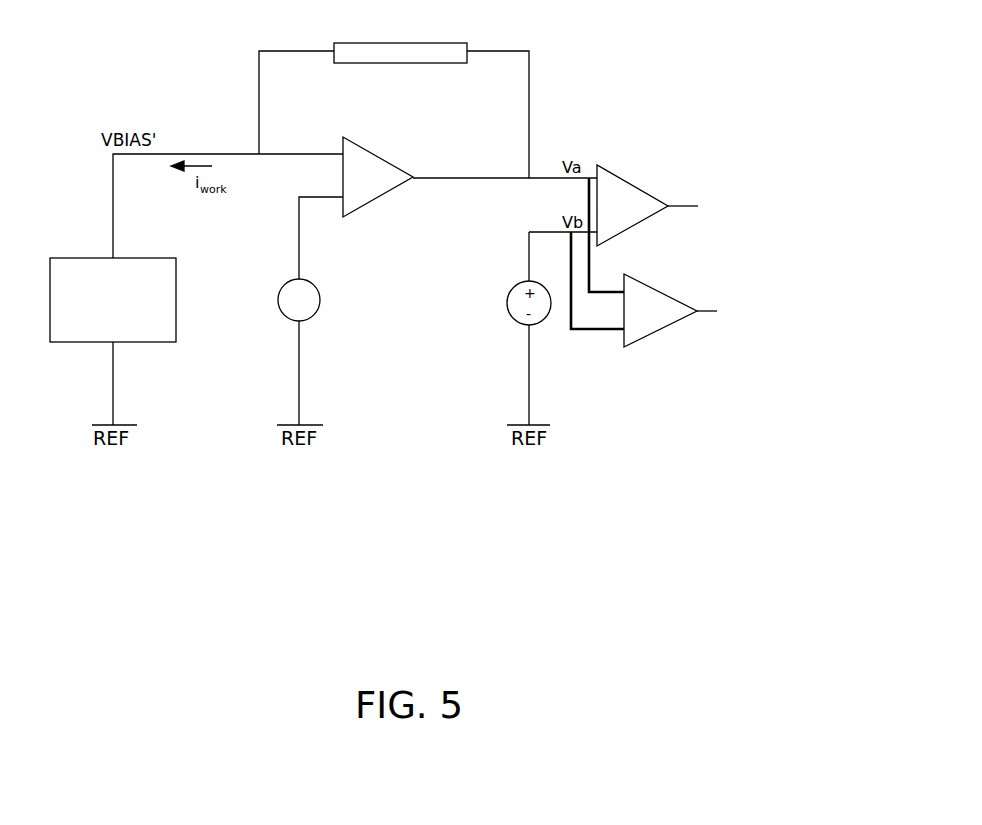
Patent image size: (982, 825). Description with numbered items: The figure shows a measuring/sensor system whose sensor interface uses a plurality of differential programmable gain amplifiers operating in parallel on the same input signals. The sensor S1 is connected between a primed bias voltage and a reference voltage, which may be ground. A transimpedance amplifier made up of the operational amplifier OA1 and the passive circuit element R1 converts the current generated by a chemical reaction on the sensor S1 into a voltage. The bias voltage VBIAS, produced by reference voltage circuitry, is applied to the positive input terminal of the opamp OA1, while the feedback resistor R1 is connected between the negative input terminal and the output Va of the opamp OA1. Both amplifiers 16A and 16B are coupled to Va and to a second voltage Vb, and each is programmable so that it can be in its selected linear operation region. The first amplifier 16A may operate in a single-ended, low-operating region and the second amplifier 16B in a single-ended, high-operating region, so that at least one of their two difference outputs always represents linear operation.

The DPGA 16A is at (643, 218).
The DPGA 16B is at (663, 330).
The passive circuit element R1 is at (394, 98).
The operational amplifier OA1 is at (383, 177).
The sensor S1 is at (113, 287).
The bias voltage VBIAS is at (328, 300).